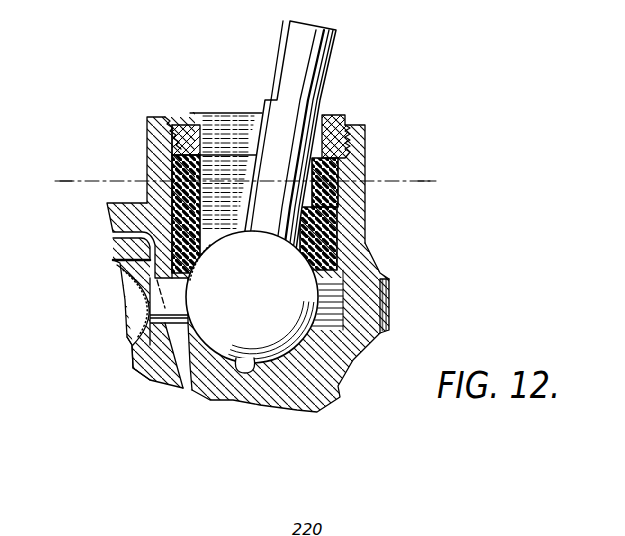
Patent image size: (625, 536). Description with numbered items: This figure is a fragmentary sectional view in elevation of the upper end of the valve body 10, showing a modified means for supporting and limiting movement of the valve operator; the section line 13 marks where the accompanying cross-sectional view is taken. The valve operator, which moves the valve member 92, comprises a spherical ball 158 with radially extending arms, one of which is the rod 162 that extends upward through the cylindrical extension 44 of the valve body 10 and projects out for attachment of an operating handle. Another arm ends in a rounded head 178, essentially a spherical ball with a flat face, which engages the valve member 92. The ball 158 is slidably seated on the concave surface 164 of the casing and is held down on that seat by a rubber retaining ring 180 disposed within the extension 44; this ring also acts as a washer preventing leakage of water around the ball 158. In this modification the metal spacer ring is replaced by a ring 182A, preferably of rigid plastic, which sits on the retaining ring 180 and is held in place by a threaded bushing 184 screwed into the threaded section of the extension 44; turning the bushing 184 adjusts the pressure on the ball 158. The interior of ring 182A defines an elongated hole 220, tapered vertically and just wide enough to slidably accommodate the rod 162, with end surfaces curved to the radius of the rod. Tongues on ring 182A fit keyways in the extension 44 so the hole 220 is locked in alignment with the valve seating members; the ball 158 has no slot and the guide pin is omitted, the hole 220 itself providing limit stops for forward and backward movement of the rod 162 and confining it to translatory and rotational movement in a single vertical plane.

The valve body 10 is at (352, 386).
The cylindrical extension 44 is at (366, 144).
The valve member 92 is at (127, 366).
The spherical ball 158 is at (258, 304).
The arm (rod) 162 is at (312, 62).
The concave surface 164 is at (245, 372).
The rounded head 178 is at (133, 284).
The rubber retaining ring 180 is at (330, 240).
The ring 182A is at (350, 167).
The threaded bushing 184 is at (186, 117).
The elongated hole 220 is at (199, 160).
The section line 13— 13 is at (427, 221).